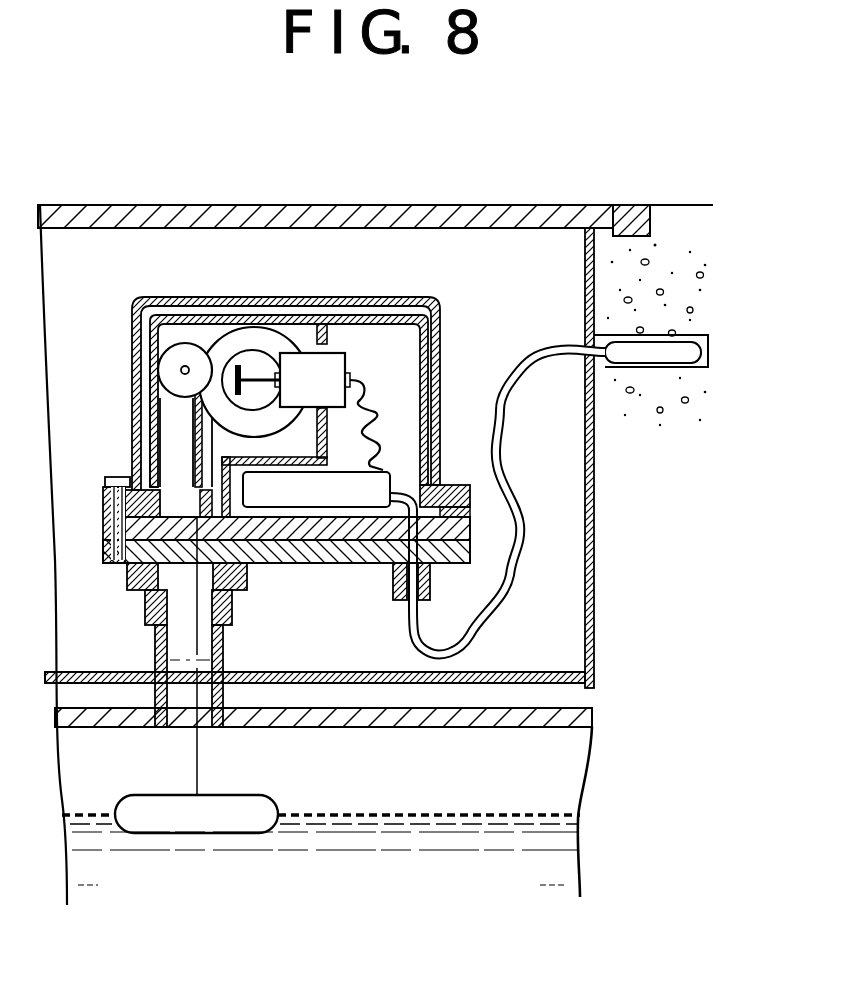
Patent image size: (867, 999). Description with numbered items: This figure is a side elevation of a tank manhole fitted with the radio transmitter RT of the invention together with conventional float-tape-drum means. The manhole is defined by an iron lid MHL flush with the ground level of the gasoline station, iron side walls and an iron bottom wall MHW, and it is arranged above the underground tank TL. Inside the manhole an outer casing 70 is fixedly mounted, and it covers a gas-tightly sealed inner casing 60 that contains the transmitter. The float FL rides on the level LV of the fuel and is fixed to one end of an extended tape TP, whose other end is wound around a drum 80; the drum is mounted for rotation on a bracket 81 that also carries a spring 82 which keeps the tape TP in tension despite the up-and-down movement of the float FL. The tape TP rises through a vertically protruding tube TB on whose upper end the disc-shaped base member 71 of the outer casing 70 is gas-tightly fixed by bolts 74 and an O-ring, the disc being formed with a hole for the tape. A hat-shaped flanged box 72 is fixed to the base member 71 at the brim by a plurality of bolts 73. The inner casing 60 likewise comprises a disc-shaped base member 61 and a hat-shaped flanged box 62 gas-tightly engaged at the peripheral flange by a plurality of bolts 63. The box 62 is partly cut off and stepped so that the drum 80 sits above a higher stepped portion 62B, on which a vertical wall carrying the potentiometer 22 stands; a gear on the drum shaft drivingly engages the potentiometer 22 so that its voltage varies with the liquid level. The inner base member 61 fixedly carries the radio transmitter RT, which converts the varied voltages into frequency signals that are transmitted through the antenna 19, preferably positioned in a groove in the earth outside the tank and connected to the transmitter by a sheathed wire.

The antenna 19 is at (640, 356).
The potentiometer 22 is at (306, 358).
The inner casing 60 is at (367, 306).
The base member 61 is at (370, 562).
The flanged box 62 is at (400, 316).
The higher stepped portion 62B is at (270, 445).
The bolts 63 is at (470, 524).
The outer casing 70 is at (438, 295).
The base member 71 is at (320, 562).
The flanged box 72 is at (325, 318).
The bolts 73 is at (116, 476).
The bolts 74 is at (128, 568).
The drum 80 is at (232, 333).
The bracket 81 is at (133, 388).
The spring 82 is at (178, 356).
The radio transmitter RT is at (438, 331).
The iron lid MHL is at (468, 204).
The iron bottom wall MHW is at (560, 670).
The tank TL is at (593, 708).
The tube TB is at (156, 658).
The tape TP is at (200, 756).
The float FL is at (265, 795).
The level LV is at (510, 806).